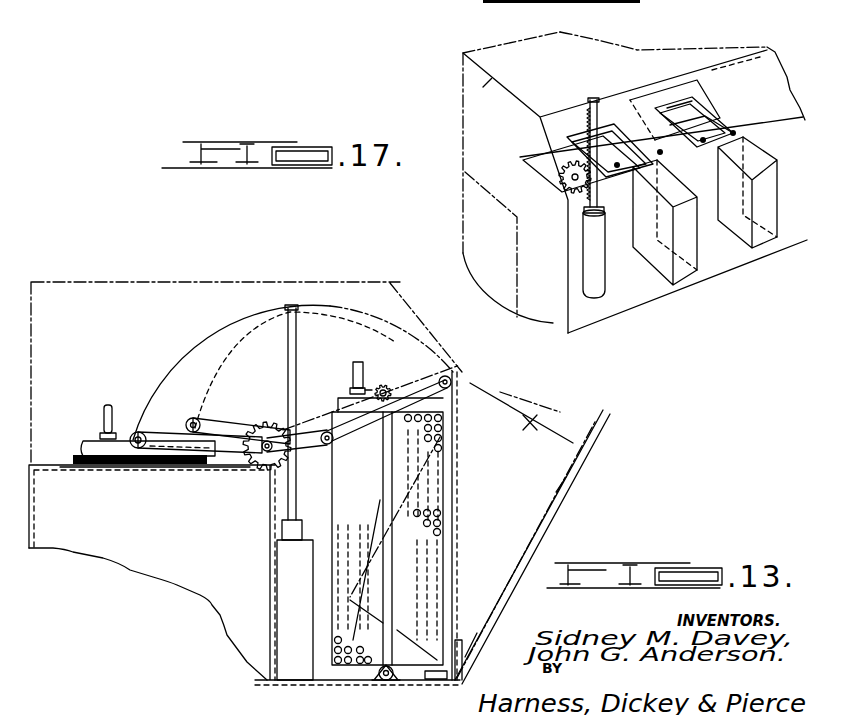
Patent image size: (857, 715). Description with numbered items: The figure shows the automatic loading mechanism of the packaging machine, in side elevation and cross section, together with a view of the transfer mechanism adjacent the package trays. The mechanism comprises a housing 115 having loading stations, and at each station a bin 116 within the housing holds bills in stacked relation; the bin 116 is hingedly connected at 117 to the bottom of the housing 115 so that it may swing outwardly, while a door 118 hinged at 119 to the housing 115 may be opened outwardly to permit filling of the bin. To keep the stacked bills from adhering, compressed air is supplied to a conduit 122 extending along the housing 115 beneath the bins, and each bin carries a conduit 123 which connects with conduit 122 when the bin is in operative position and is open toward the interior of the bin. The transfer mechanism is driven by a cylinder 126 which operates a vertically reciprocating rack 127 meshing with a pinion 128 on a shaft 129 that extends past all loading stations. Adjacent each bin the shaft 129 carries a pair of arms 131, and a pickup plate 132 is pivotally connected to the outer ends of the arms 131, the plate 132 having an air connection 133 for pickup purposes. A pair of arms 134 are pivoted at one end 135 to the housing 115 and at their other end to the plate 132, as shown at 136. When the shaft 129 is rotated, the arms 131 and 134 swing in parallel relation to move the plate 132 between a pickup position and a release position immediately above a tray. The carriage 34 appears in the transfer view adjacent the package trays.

In FIG. 17, the carriage 34 is at (677, 108).
In FIG. 13, the housing 115 is at (190, 283).
In FIG. 17, the housing 115 is at (572, 43).
In FIG. 13, the bin 116 is at (380, 497).
In FIG. 17, the bin 116 is at (762, 240).
In FIG. 13, the hinge connection 117 is at (445, 681).
In FIG. 13, the door 118 is at (457, 370).
In FIG. 13, the door hinge 119 is at (460, 681).
In FIG. 13, the conduit 122 is at (372, 684).
In FIG. 13, the bin conduit 123 is at (392, 592).
In FIG. 13, the cylinder 126 is at (275, 582).
In FIG. 17, the cylinder 126 is at (595, 296).
In FIG. 13, the rack 127 is at (287, 500).
In FIG. 17, the rack 127 is at (550, 129).
In FIG. 13, the pinion 128 is at (247, 475).
In FIG. 17, the pinion 128 is at (558, 176).
In FIG. 17, the shaft 129 is at (582, 208).
In FIG. 13, the arms 131 is at (202, 473).
In FIG. 13, the pickup plate 132 is at (87, 477).
In FIG. 13, the air connection 133 is at (103, 412).
In FIG. 13, the arms 134 is at (228, 422).
In FIG. 13, the pivot end 135 is at (337, 443).
In FIG. 13, the pivot connection 136 is at (193, 427).